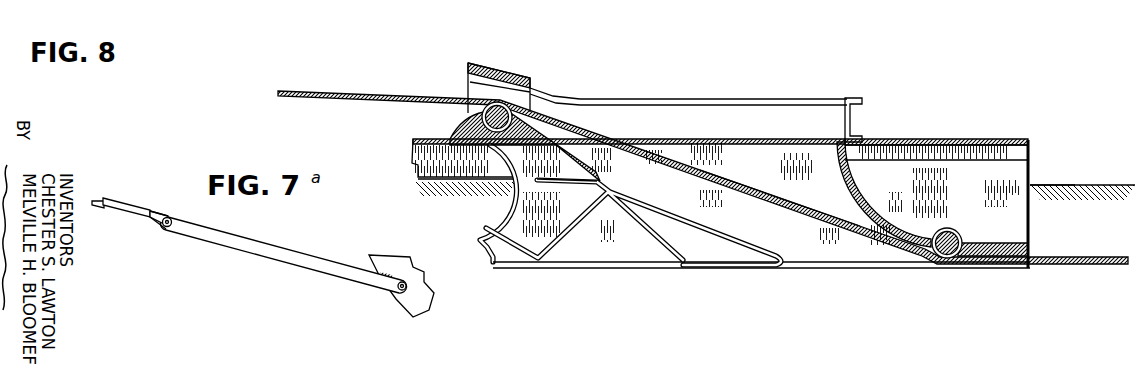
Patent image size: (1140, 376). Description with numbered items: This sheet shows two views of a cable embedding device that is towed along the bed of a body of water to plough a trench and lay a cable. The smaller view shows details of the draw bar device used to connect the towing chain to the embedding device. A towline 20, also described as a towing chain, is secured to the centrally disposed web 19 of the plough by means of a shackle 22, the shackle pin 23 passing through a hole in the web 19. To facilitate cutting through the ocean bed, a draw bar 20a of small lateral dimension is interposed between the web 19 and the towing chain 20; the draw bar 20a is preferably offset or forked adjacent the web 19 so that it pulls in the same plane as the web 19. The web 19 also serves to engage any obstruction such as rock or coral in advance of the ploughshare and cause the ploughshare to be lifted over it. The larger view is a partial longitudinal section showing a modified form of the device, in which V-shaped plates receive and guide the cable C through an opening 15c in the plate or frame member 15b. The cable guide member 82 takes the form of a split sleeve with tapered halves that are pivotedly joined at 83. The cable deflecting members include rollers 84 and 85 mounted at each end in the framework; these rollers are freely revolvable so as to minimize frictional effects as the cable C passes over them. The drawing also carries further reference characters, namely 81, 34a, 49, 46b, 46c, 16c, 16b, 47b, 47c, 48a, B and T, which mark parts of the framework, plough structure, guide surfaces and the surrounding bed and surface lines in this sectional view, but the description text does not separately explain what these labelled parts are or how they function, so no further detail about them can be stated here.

In FIG. 8, the cable guide member 82 is at (497, 77).
In FIG. 8, the pivot joint 83 is at (538, 98).
In FIG. 8, the bar 81 is at (693, 111).
In FIG. 8, the opening 15c is at (772, 141).
In FIG. 8, the plate or frame member 15b is at (960, 141).
In FIG. 8, the bracket 34a is at (852, 123).
In FIG. 8, the panel 49 is at (1020, 153).
In FIG. 8, the roller 84 is at (456, 115).
In FIG. 8, the bracket arm 46b is at (552, 128).
In FIG. 8, the bar 46c is at (600, 181).
In FIG. 8, the truss member 16c is at (752, 241).
In FIG. 8, the bottom plate 16b is at (645, 270).
In FIG. 8, the curved guide 47b is at (895, 204).
In FIG. 8, the guide strap 47c is at (863, 199).
In FIG. 8, the roller 85 is at (962, 242).
In FIG. 8, the end wall 48a is at (1016, 218).
In FIG. 8, the cable C is at (381, 92).
In FIG. 8, the ground surface B is at (1047, 197).
In FIG. 8, the ground level T is at (1093, 207).
In FIG. 7a, the towline 20 is at (138, 200).
In FIG. 7a, the draw bar 20a is at (275, 250).
In FIG. 7a, the shackle 22 is at (155, 226).
In FIG. 7a, the shackle pin 23 is at (172, 219).
In FIG. 7a, the web 19 is at (400, 295).